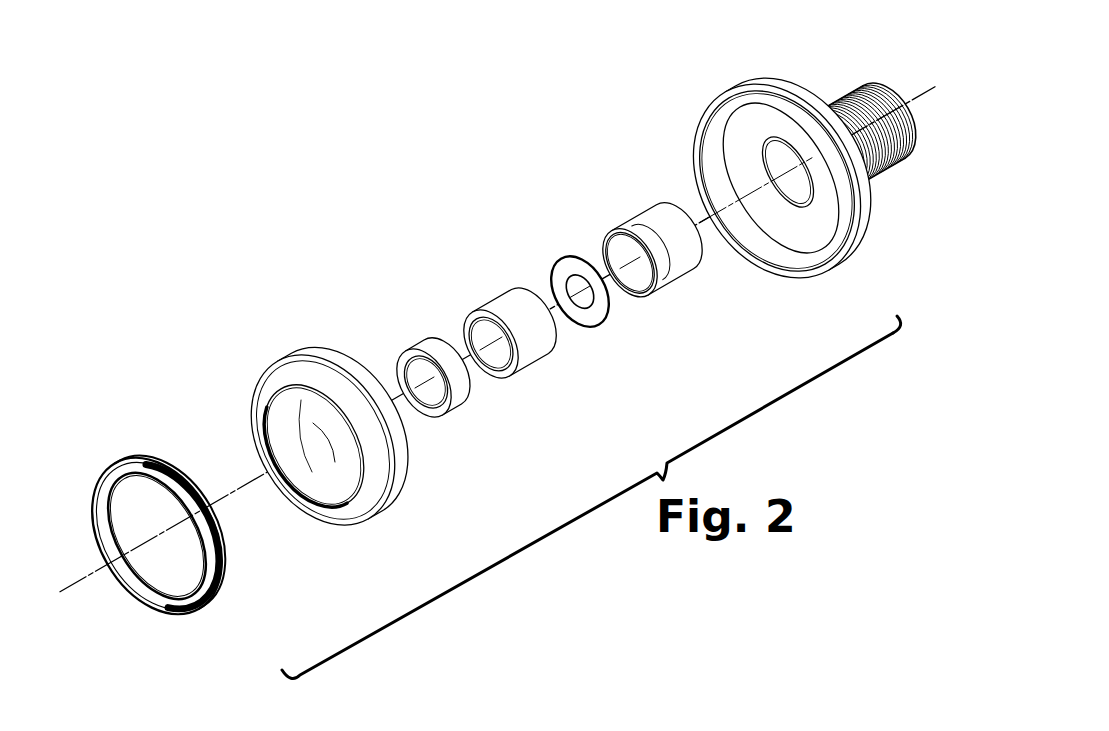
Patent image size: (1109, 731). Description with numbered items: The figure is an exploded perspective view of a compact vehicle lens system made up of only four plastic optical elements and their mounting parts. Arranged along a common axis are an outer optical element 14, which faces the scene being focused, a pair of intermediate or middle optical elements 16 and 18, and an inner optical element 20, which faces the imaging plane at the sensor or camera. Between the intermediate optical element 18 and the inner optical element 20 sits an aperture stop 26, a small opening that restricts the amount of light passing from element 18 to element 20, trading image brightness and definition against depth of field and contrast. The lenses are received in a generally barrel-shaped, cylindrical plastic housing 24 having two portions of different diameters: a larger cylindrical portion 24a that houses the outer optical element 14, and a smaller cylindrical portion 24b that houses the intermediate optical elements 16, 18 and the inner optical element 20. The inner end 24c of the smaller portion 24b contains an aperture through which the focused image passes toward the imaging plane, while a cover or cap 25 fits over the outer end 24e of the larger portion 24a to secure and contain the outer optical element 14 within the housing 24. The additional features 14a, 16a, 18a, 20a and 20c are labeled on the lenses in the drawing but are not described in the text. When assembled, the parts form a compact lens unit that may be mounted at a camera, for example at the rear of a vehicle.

The outer optical element 14 is at (314, 453).
The lens inner surface 14a is at (280, 429).
The intermediate optical element 16 is at (426, 383).
The spacer ring bore 16a is at (420, 379).
The intermediate optical element 18 is at (508, 347).
The spacer sleeve bore 18a is at (492, 338).
The inner optical element 20 is at (638, 270).
The sleeve interior 20a is at (632, 250).
The sleeve front rim 20c is at (622, 280).
The housing 24 is at (750, 189).
The cylindrical portion 24a is at (742, 85).
The cylindrical portion 24b is at (825, 101).
The inner end 24c is at (883, 100).
The outer end 24e is at (694, 152).
The cover or cap 25 is at (203, 603).
The aperture stop 26 is at (597, 327).